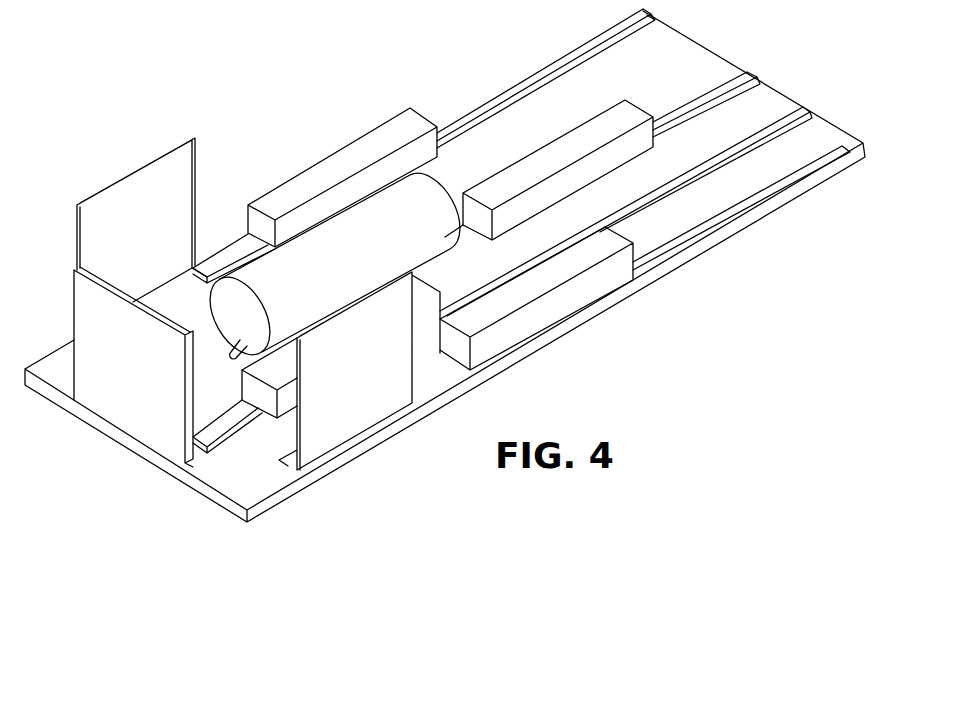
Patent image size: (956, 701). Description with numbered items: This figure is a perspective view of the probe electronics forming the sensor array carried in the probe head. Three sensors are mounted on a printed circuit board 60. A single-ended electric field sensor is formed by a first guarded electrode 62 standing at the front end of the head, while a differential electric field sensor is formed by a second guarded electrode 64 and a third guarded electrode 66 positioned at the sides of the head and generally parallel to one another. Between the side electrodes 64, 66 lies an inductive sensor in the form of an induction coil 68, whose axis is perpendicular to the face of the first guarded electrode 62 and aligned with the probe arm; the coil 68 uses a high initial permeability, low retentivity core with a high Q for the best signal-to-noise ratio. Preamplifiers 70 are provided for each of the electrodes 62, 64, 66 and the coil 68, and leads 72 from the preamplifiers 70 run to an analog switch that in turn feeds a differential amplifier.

The printed circuit board 60 is at (280, 492).
The first guarded electrode 62 is at (132, 410).
The second guarded electrode 64 is at (140, 203).
The third guarded electrode 66 is at (377, 410).
The induction coil 68 is at (250, 268).
The preamplifiers 70 is at (495, 182).
The leads 72 is at (842, 147).